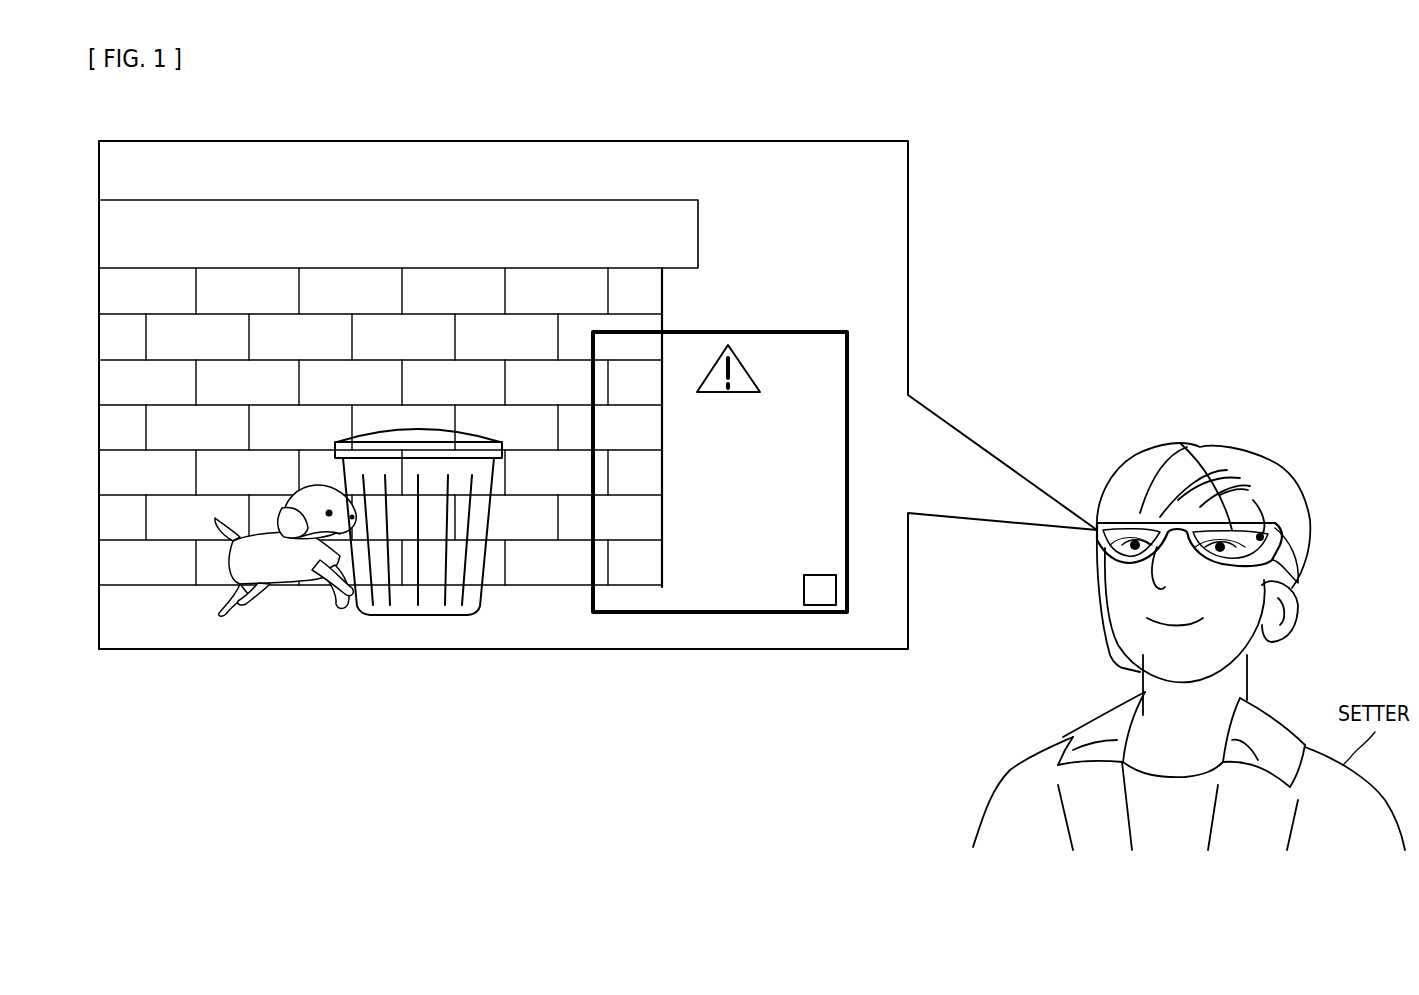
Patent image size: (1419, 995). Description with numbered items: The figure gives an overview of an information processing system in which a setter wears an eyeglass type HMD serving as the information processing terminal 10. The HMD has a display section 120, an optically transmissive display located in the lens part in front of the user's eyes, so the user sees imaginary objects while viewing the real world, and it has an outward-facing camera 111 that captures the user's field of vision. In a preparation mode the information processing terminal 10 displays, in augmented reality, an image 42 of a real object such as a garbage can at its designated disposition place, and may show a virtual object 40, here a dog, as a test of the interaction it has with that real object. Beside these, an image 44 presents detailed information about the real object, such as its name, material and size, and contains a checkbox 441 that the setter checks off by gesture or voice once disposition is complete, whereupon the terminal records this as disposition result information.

The information processing terminal 10 is at (1300, 540).
The outward-facing camera 111 is at (1265, 525).
The display section 120 is at (1180, 443).
The virtual object 40 is at (210, 607).
The image of the real object 42 is at (415, 620).
The image indicating detailed information 44 is at (810, 330).
The checkbox 441 is at (800, 590).